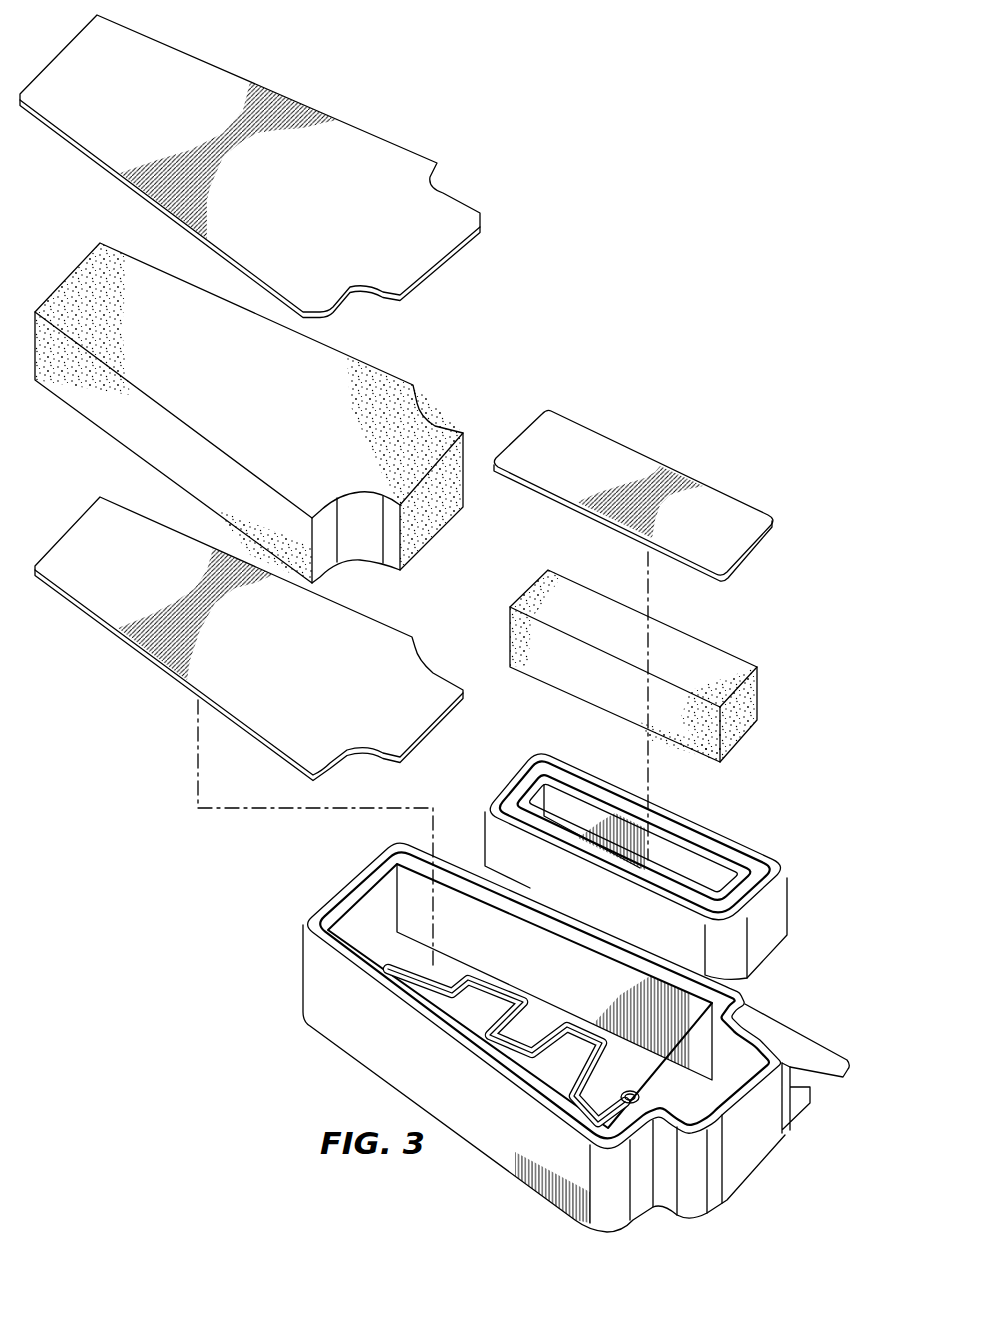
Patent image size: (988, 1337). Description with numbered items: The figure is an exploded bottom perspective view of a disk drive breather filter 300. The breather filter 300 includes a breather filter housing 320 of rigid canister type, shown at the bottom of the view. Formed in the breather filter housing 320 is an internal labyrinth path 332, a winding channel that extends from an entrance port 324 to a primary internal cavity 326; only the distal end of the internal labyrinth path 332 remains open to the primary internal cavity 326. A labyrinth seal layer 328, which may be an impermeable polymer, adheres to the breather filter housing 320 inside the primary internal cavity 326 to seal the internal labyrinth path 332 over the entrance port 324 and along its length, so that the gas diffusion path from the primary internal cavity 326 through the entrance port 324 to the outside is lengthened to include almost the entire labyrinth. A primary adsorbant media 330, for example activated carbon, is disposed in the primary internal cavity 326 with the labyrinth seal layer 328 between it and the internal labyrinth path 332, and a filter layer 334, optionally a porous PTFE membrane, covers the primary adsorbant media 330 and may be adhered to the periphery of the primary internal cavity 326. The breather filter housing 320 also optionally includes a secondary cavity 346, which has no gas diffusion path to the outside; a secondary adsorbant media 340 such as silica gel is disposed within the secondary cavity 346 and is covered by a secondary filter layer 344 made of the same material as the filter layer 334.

The disk drive breather filter 300 is at (643, 65).
The breather filter housing 320 is at (564, 1037).
The entrance port 324 is at (642, 1083).
The primary internal cavity 326 is at (398, 948).
The labyrinth seal layer 328 is at (77, 545).
The primary adsorbant media 330 is at (77, 290).
The internal labyrinth path 332 is at (548, 1040).
The filter layer 334 is at (70, 62).
The secondary adsorbant media 340 is at (682, 645).
The secondary filter layer 344 is at (725, 510).
The secondary cavity 346 is at (718, 882).